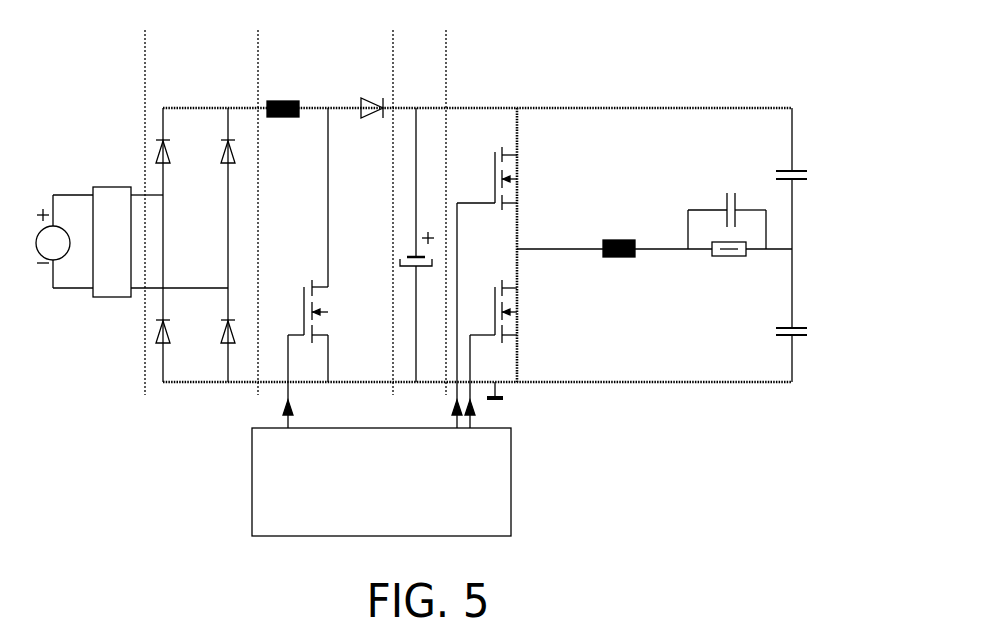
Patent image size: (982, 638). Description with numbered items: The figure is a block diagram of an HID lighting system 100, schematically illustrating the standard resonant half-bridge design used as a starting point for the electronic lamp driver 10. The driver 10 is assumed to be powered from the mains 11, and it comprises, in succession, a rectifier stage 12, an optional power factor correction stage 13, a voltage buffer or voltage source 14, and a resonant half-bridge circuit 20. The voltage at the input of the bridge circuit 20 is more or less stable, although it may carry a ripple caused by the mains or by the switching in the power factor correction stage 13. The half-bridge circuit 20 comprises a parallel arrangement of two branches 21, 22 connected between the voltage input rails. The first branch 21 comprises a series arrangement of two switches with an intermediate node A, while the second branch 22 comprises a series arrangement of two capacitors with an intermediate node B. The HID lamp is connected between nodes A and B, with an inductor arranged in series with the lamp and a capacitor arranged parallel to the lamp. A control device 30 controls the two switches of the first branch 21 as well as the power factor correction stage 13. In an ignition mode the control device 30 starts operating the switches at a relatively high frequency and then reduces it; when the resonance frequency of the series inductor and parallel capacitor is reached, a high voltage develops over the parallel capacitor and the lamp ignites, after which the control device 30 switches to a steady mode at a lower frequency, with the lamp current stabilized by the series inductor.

The driver 10 is at (732, 80).
The mains 11 is at (132, 174).
The rectifier stage 12 is at (207, 217).
The power factor correction stage 13 is at (303, 240).
The voltage buffer or voltage source 14 is at (398, 217).
The resonant half-bridge circuit 20 is at (639, 240).
The first branch 21 is at (533, 360).
The second branch 22 is at (799, 362).
The control device 30 is at (368, 490).
The HID lighting system 100 is at (133, 410).